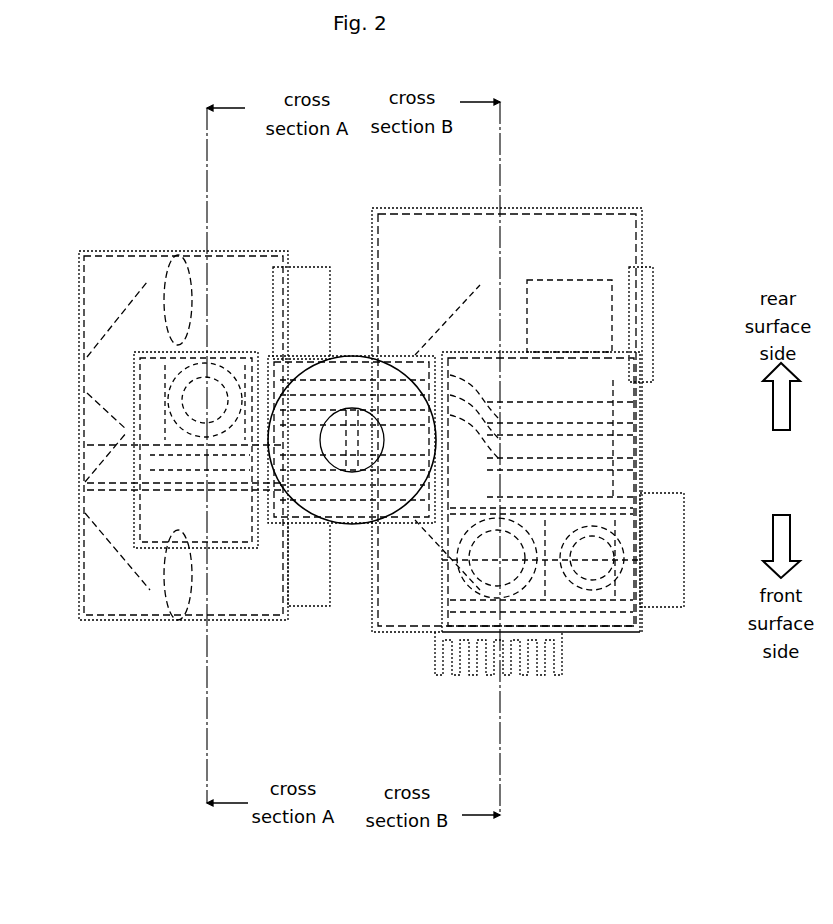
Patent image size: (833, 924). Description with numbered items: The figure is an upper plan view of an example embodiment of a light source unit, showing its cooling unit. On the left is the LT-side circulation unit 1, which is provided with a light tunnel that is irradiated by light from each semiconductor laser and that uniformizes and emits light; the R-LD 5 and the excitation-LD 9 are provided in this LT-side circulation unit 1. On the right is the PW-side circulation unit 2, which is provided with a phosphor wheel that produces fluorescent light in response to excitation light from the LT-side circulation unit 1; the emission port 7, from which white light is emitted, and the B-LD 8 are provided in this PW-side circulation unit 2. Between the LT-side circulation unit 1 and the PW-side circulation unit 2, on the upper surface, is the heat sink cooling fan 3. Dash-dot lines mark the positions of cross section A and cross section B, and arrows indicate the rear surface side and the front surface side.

The LT-side circulation unit 1 is at (118, 590).
The PW-side circulation unit 2 is at (578, 240).
The heat sink cooling fan 3 is at (345, 356).
The R-LD 5 is at (318, 595).
The emission port 7 is at (650, 282).
The B-LD 8 is at (662, 512).
The excitation-LD 9 is at (305, 265).